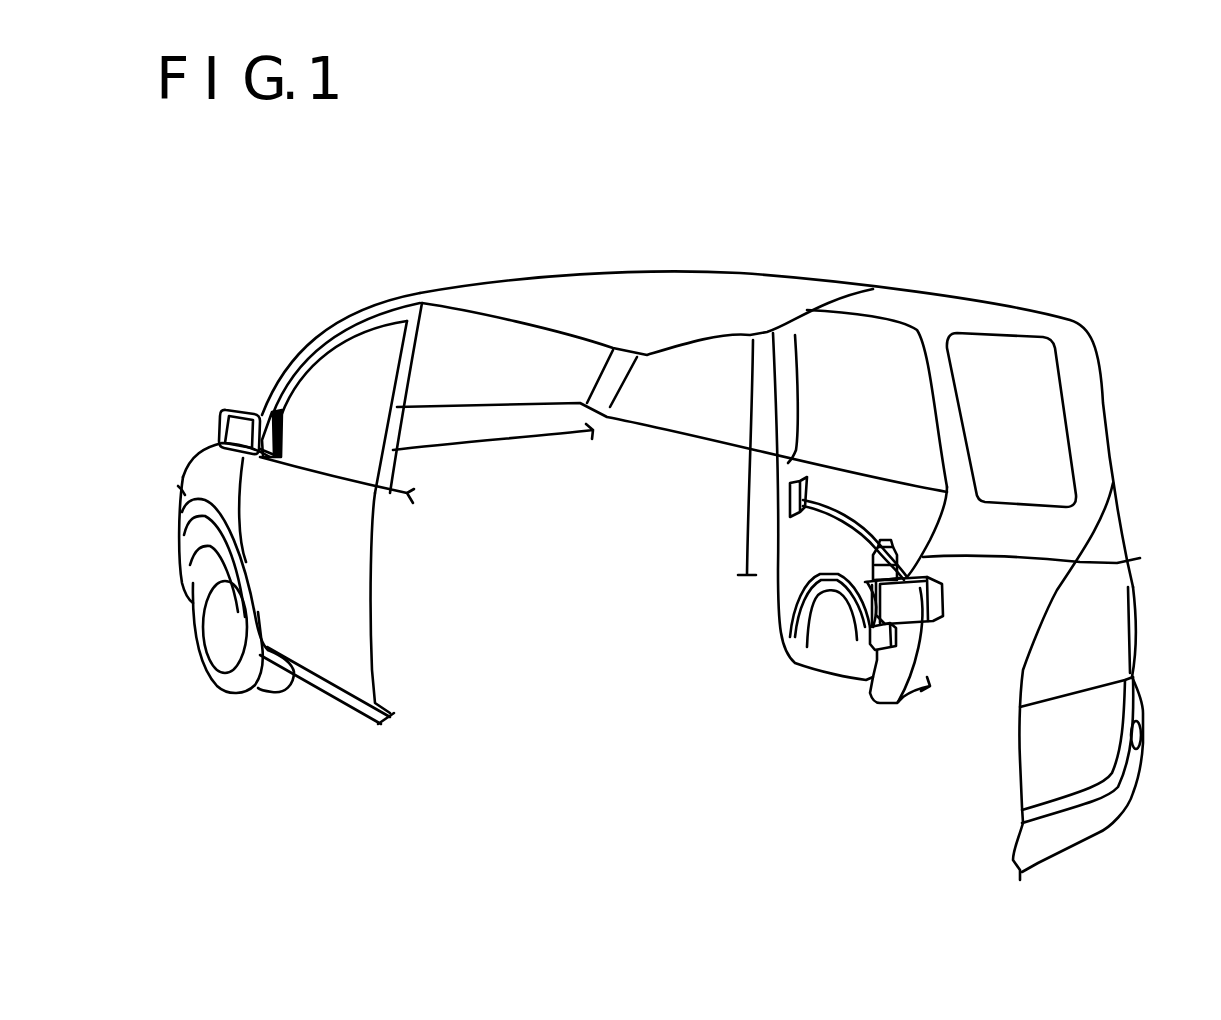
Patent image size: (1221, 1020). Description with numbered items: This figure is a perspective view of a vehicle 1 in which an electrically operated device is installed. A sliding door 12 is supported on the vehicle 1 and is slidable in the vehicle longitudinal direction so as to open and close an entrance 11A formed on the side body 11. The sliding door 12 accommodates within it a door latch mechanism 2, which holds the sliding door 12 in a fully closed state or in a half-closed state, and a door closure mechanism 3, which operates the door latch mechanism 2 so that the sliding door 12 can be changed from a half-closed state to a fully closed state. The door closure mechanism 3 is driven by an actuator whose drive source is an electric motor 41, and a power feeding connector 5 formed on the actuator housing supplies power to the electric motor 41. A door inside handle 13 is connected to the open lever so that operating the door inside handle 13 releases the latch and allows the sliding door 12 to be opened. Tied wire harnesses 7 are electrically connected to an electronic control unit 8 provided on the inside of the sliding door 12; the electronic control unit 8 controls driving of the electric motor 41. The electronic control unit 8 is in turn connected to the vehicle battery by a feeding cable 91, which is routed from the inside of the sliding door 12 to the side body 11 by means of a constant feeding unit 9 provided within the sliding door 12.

The vehicle 1 is at (178, 445).
The entrance 11A is at (795, 335).
The sliding door 12 is at (882, 495).
The door inside handle 13 is at (790, 493).
The power feeding connector 5 is at (877, 567).
The feeding cable 91 is at (790, 585).
The constant feeding unit 9 is at (817, 638).
The tied wire harnesses 7 is at (852, 615).
The door latch mechanism 2 is at (943, 603).
The door closure mechanism 3 is at (903, 603).
The electronic control unit 8 is at (897, 640).
The side body 11 is at (1023, 523).
The electric motor 41 is at (1087, 543).